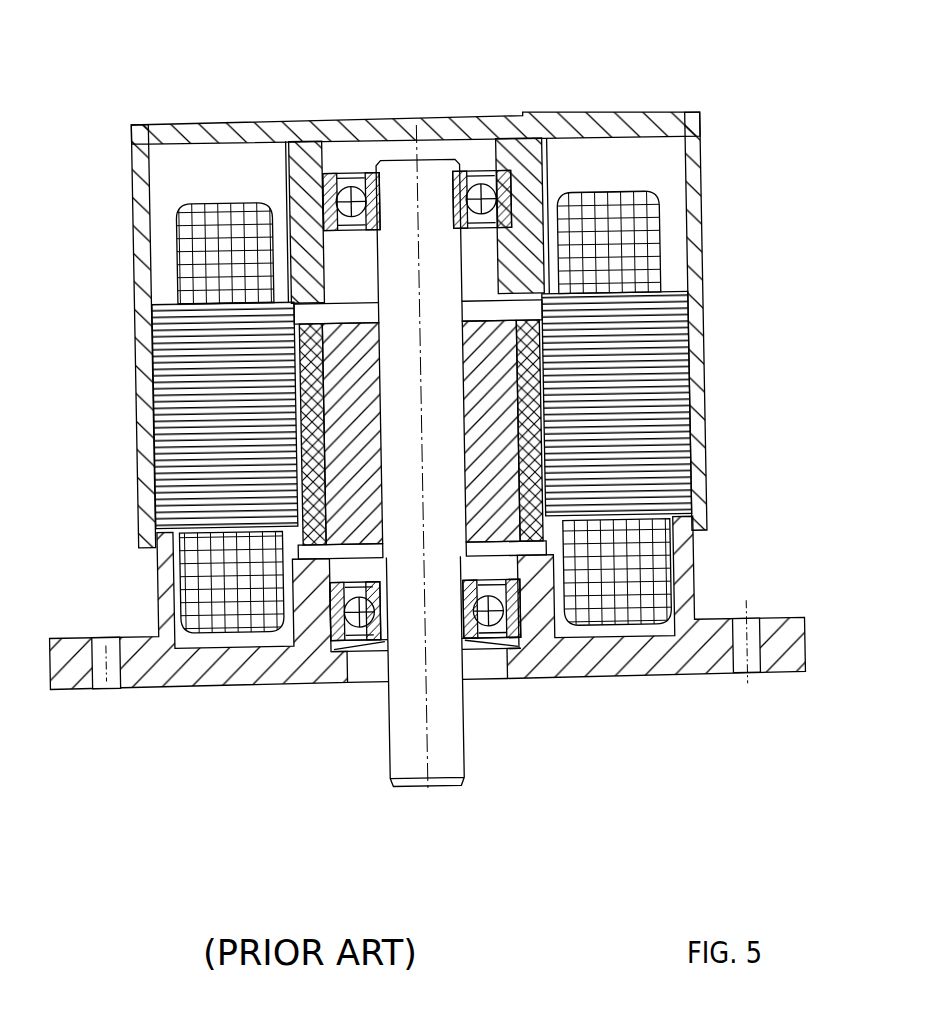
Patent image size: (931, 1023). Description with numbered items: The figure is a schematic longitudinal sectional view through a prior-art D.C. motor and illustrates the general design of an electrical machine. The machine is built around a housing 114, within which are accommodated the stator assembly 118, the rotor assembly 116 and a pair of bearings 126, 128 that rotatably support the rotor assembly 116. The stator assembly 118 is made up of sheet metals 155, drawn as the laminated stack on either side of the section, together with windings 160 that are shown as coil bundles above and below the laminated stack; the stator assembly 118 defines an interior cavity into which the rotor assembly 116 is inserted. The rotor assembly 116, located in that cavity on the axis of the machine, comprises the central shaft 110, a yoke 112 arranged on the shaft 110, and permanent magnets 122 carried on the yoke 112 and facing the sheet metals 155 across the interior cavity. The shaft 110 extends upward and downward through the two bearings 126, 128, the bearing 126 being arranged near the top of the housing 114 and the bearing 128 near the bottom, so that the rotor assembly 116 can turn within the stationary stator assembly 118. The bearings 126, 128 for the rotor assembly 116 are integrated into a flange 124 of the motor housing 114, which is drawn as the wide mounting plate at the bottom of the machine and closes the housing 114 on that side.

The shaft 110 is at (433, 718).
The yoke 112 is at (493, 483).
The housing 114 is at (622, 122).
The rotor assembly 116 is at (362, 124).
The stator assembly 118 is at (204, 171).
The permanent magnets 122 is at (541, 405).
The flange 124 is at (201, 684).
The bearing 126 is at (500, 199).
The bearing 128 is at (520, 618).
The sheet metals 155 is at (677, 309).
The windings 160 is at (623, 256).